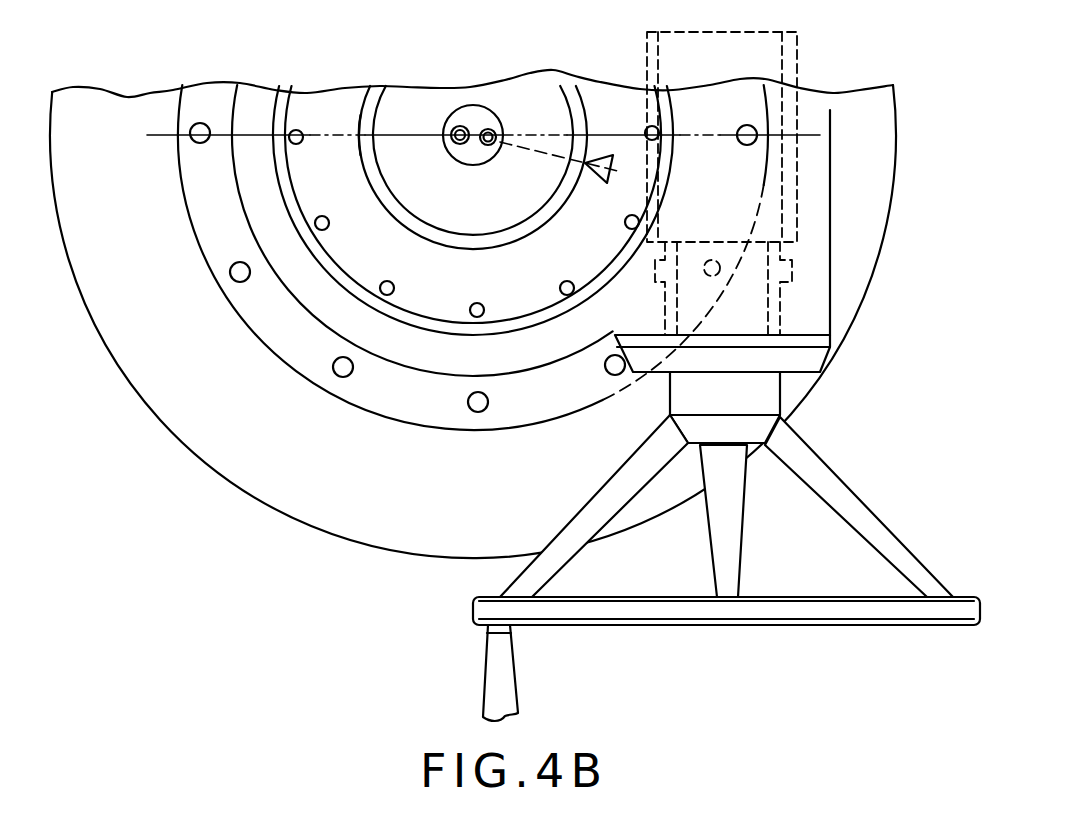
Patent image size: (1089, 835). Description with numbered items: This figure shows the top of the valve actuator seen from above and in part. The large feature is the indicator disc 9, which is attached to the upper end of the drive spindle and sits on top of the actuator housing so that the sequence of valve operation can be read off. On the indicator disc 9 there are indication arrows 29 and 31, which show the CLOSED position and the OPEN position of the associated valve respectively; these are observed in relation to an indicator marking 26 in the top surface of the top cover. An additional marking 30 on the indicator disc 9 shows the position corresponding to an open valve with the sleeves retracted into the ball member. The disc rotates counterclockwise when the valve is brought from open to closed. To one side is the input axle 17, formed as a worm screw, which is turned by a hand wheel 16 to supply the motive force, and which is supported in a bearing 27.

The indicator disc 9 is at (521, 88).
The hand wheel 16 is at (978, 609).
The input axle 17 is at (787, 143).
The indicator marking 26 is at (588, 157).
The bearing 27 is at (772, 318).
The indication arrow 29 is at (356, 135).
The additional marking 30 is at (455, 233).
The indication arrow 31 is at (573, 177).